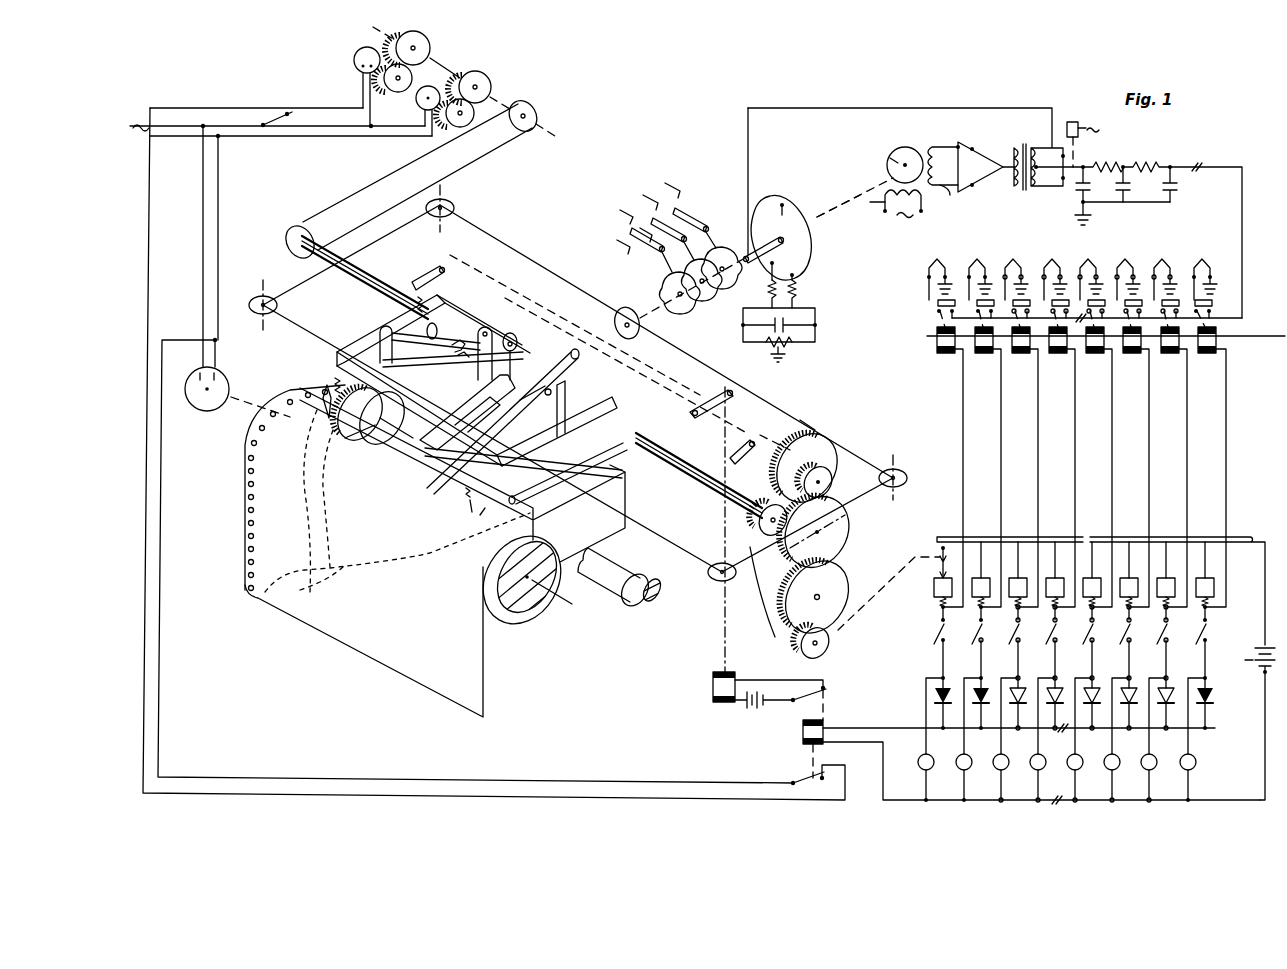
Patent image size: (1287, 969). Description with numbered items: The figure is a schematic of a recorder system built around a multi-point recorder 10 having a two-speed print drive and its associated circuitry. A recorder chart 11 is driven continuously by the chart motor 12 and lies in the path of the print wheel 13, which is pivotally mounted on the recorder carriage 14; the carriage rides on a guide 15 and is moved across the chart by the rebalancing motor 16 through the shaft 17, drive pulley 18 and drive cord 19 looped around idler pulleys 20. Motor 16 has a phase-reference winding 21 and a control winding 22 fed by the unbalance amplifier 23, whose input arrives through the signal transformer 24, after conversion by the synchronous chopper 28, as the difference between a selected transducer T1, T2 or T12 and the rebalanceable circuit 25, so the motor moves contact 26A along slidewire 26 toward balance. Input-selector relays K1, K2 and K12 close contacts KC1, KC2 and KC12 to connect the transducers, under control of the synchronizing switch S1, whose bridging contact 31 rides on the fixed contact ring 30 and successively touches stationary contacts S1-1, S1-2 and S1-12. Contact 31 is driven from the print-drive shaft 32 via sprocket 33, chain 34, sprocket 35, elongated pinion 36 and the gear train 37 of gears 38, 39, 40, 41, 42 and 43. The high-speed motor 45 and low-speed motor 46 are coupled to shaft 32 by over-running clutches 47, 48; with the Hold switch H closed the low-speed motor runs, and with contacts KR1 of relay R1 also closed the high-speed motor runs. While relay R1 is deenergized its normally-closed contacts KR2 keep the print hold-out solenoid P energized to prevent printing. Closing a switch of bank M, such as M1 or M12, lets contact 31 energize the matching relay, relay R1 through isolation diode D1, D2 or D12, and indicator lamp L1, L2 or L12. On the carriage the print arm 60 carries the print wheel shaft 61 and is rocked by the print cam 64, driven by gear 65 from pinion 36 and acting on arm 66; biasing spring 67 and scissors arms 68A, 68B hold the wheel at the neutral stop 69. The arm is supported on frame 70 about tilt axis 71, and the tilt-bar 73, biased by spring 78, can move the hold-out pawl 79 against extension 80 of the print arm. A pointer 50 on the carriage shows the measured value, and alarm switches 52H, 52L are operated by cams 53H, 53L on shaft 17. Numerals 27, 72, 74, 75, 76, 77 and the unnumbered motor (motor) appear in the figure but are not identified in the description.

The multi-point recorder 10 is at (578, 386).
The recorder chart 11 is at (243, 518).
The chart motor 12 is at (185, 405).
The print wheel 13 is at (350, 428).
The recorder carriage 14 is at (462, 475).
The guide 15 is at (620, 598).
The rebalancing motor 16 is at (905, 152).
The shaft 17 is at (848, 190).
The drive pulley 18 is at (615, 318).
The drive cord 19 is at (808, 428).
The idler pulleys 20 is at (290, 292).
The phase-reference winding 21 is at (868, 202).
The control winding 22 is at (952, 190).
The unbalance amplifier 23 is at (986, 167).
The signal transformer 24 is at (1022, 187).
The rebalanceable circuit 25 is at (822, 318).
The slidewire 26 is at (805, 265).
The slidewire contact 26A is at (770, 208).
The battery 27 is at (1250, 652).
The synchronous chopper 28 is at (1086, 133).
The fixed contact ring 30 is at (1232, 540).
The bridging contact 31 is at (935, 548).
The print-drive shaft 32 is at (508, 100).
The sprocket 33 is at (536, 105).
The chain 34 is at (493, 145).
The sprocket 35 is at (300, 232).
The elongated pinion 36 is at (378, 262).
The gear train 37 is at (762, 602).
The gear 38 is at (760, 530).
The gear 39 is at (795, 436).
The gear 40 is at (830, 472).
The gear 41 is at (840, 505).
The gear 42 is at (830, 570).
The gear 43 is at (826, 640).
The high-speed motor 45 is at (354, 55).
The low-speed motor 46 is at (416, 99).
The over-running clutch 47 is at (393, 40).
The over-running clutch 48 is at (465, 72).
The pointer 50 is at (320, 407).
The high alarm switch 52H is at (628, 232).
The low alarm switch 52L is at (712, 195).
The alarm cam 53H is at (679, 303).
The alarm cam 53L is at (735, 292).
The print arm 60 is at (503, 383).
The print wheel shaft 61 is at (440, 470).
The print cam 64 is at (456, 338).
The gear 65 is at (426, 334).
The arm 66 is at (440, 376).
The biasing spring 67 is at (468, 505).
The scissors arm 68A is at (464, 490).
The scissors arm 68B is at (482, 521).
The stop 69 is at (530, 488).
The yoke or frame 70 is at (335, 350).
The tilt axis 71 is at (485, 330).
The spring 72 is at (333, 380).
The tilt-bar 73 is at (645, 372).
The post 74 is at (512, 325).
The link 75 is at (428, 270).
The link 76 is at (770, 443).
The lever 77 is at (712, 398).
The spring 78 is at (412, 296).
The hold-out pawl 79 is at (562, 368).
The extension 80 is at (535, 397).
The Hold switch H is at (276, 120).
The print hold-out solenoid P is at (711, 683).
The relay contacts KR1 is at (790, 780).
The normally-closed relay contacts KR2 is at (830, 695).
The relay R1 is at (802, 732).
The transducer T1 is at (929, 273).
The transducer T2 is at (970, 272).
The transducer T12 is at (1196, 270).
The relay contact KC1 is at (937, 310).
The relay contacts KC2 is at (975, 303).
The key contact KC12 is at (1215, 306).
The input-selector relay K1 is at (936, 340).
The input-selector relay K2 is at (980, 355).
The input-selector relay K12 is at (1216, 347).
The synchronizing switch S1 is at (925, 540).
The stationary contact S1-1 is at (933, 588).
The stationary contact S1-2 is at (978, 566).
The stationary contact S1-12 is at (1214, 588).
The switch bank M is at (905, 618).
The switch M1 is at (936, 626).
The switch M12 is at (1206, 632).
The isolation diode D1 is at (935, 692).
The isolation diode D2 is at (985, 690).
The isolation diode D12 is at (1215, 697).
The indicator lamp L1 is at (918, 765).
The indicator lamp L2 is at (958, 770).
The indicator lamp L12 is at (1197, 767).
The element motor is at (536, 577).